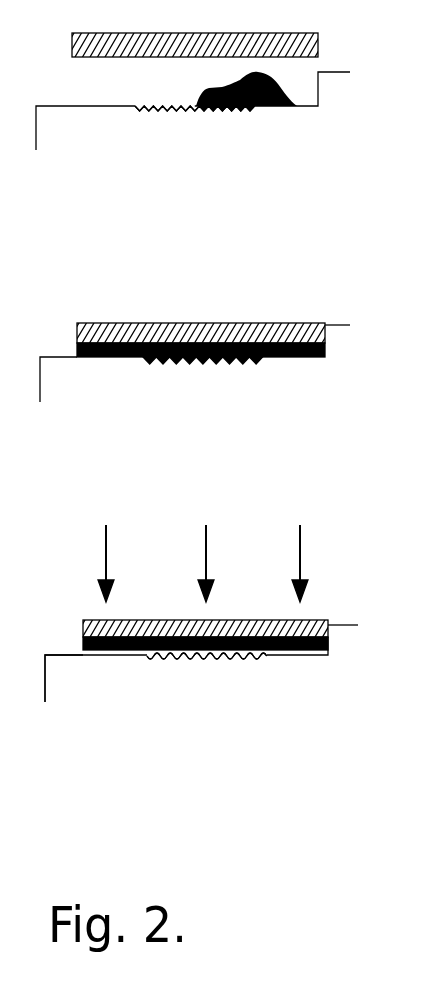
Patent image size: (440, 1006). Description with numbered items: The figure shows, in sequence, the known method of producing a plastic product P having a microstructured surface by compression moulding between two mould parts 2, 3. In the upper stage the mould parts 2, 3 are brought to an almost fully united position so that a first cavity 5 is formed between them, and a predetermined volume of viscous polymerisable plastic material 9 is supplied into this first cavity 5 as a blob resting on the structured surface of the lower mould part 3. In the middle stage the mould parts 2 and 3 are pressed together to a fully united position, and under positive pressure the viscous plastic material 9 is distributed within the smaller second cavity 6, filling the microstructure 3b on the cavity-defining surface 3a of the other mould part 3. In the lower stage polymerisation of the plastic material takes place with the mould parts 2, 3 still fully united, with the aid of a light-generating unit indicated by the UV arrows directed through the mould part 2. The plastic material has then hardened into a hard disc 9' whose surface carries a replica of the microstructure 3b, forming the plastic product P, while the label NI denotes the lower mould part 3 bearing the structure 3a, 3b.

The mould part 2 is at (72, 44).
The mould part 3 is at (167, 157).
The first cavity 5 is at (167, 85).
The viscous polymerisable plastic material 9 is at (201, 250).
The second cavity 6 is at (247, 360).
The cavity-defining surface 3a is at (202, 663).
The microstructure 3b is at (165, 715).
The hard disc 9' is at (239, 700).
The plastic product P is at (330, 645).
The nickel shim NI is at (65, 733).
The UV irradiation UV is at (236, 561).